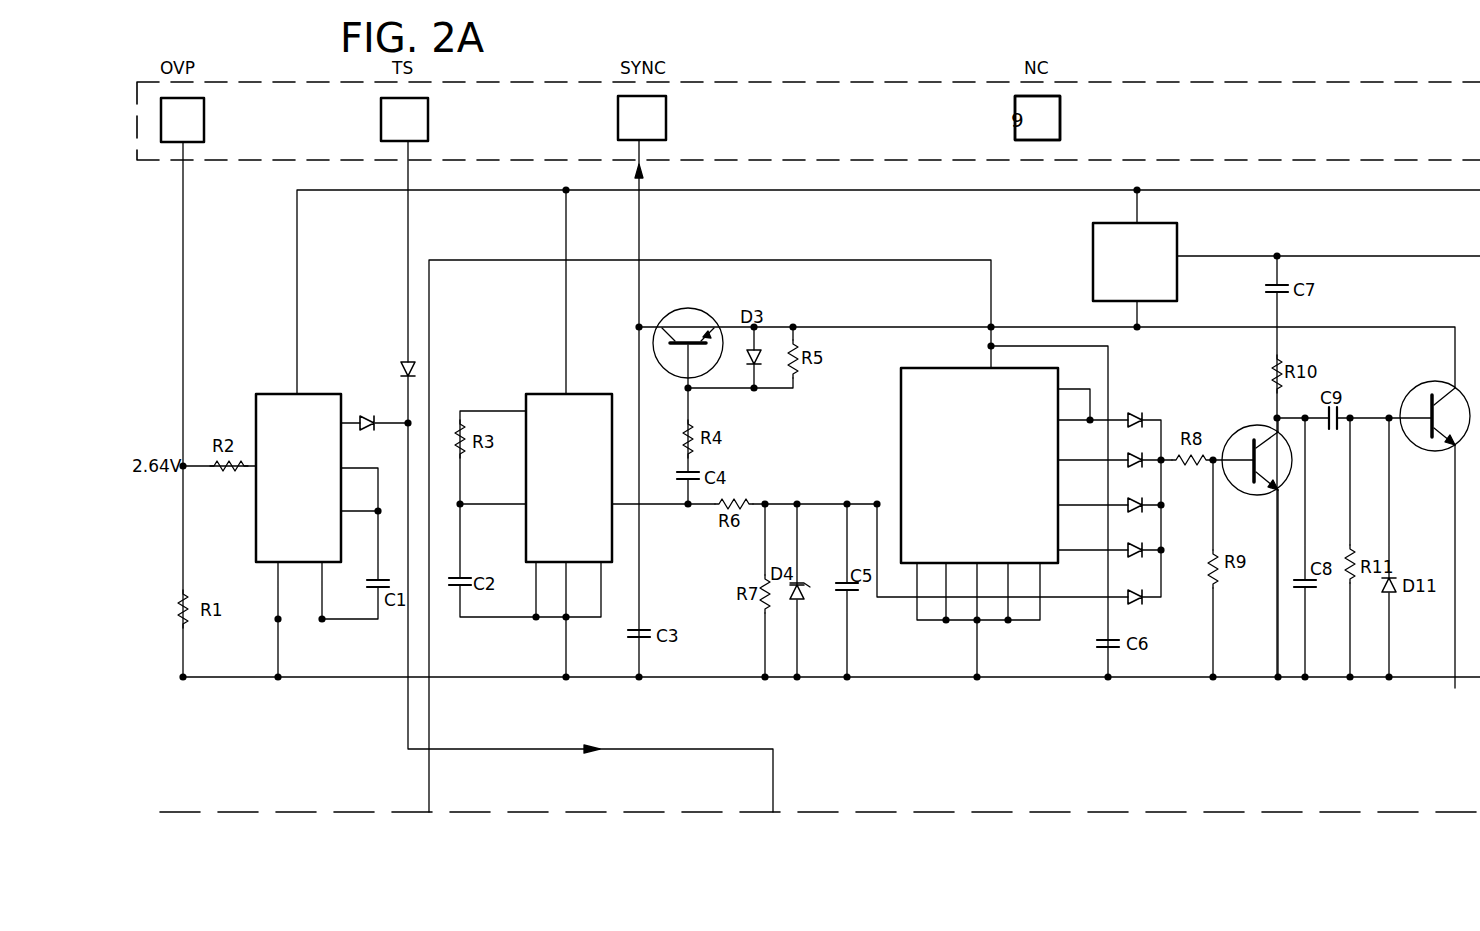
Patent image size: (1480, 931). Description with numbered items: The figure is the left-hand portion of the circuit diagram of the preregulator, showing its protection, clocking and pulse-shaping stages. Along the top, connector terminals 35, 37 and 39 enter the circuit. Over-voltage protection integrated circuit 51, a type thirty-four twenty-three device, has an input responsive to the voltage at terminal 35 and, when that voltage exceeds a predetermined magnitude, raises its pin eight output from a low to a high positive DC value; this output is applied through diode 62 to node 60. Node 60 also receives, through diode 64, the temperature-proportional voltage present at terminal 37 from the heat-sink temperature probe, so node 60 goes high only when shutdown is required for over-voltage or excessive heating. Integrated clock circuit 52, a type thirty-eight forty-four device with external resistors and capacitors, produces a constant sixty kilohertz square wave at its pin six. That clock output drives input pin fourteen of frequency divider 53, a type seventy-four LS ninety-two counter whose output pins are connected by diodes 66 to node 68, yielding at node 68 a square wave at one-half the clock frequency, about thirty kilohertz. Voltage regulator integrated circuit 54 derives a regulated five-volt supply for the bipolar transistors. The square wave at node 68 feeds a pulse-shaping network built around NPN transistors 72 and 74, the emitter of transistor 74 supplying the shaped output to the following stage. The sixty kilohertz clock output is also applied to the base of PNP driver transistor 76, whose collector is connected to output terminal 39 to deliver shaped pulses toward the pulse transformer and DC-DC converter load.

The terminal 35 is at (204, 124).
The terminal 37 is at (428, 124).
The output terminal 39 is at (666, 124).
The integrated circuit 51 is at (258, 520).
The integrated clock circuit 52 is at (527, 396).
The frequency divider 53 is at (901, 393).
The integrated circuit 54 is at (1098, 238).
The node 60 is at (405, 414).
The diode 62 is at (377, 437).
The diode 64 is at (400, 364).
The diodes 66 is at (1150, 491).
The node 68 is at (1163, 456).
The NPN transistor 72 is at (1265, 480).
The NPN transistor 74 is at (1420, 392).
The PNP driver transistor 76 is at (694, 334).